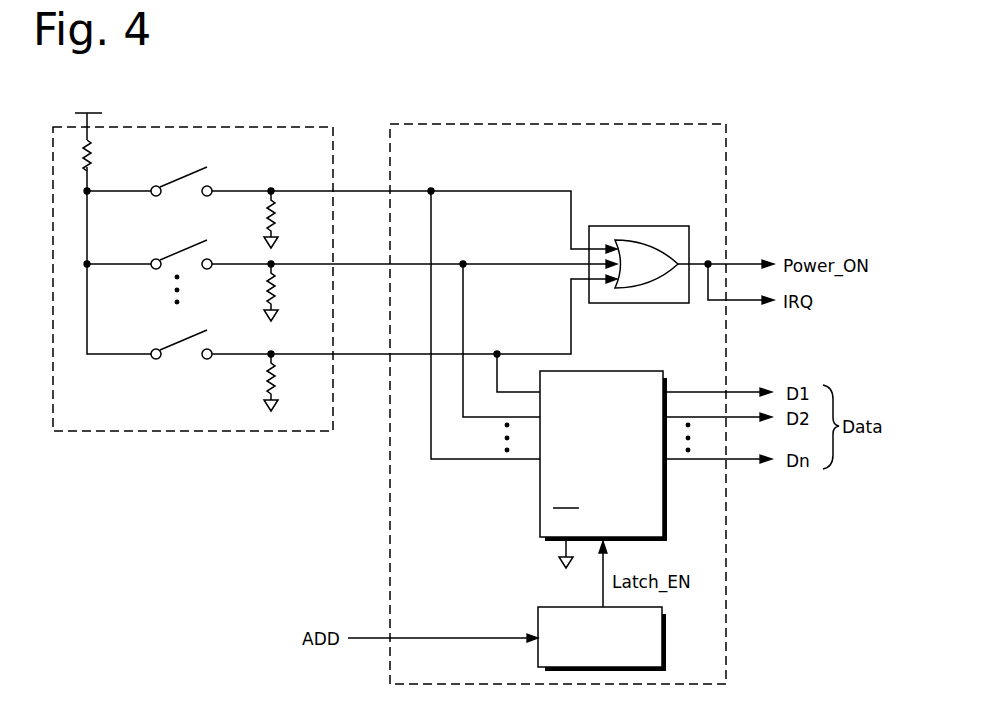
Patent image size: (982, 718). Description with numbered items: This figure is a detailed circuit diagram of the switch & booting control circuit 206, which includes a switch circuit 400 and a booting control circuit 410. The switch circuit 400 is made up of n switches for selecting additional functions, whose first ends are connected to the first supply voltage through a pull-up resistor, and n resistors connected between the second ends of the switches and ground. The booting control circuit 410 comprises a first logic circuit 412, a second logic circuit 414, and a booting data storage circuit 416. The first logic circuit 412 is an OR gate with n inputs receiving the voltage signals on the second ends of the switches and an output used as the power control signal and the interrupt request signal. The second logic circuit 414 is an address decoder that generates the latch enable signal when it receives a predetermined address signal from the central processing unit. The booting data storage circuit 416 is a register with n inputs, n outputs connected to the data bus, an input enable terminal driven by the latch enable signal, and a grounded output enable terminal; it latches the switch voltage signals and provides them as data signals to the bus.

The switch circuit 400 is at (177, 431).
The switch & booting control circuit 206 is at (540, 103).
The booting control circuit 410 is at (726, 180).
The first logic circuit 412 is at (655, 226).
The second logic circuit 414 is at (546, 607).
The booting data storage circuit 416 is at (540, 490).